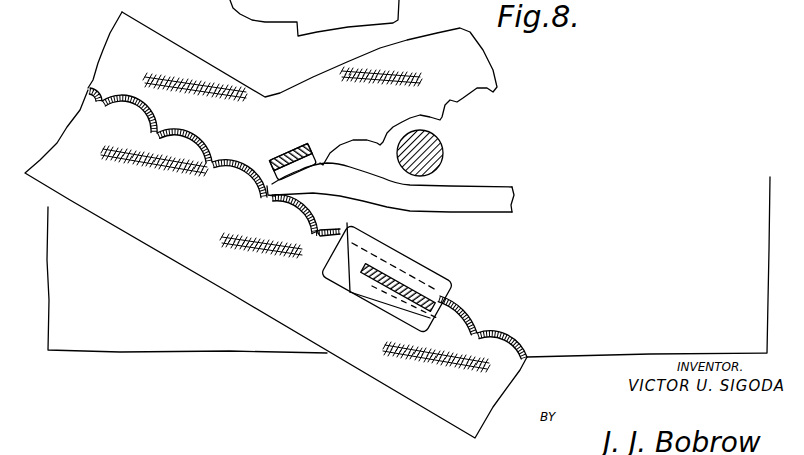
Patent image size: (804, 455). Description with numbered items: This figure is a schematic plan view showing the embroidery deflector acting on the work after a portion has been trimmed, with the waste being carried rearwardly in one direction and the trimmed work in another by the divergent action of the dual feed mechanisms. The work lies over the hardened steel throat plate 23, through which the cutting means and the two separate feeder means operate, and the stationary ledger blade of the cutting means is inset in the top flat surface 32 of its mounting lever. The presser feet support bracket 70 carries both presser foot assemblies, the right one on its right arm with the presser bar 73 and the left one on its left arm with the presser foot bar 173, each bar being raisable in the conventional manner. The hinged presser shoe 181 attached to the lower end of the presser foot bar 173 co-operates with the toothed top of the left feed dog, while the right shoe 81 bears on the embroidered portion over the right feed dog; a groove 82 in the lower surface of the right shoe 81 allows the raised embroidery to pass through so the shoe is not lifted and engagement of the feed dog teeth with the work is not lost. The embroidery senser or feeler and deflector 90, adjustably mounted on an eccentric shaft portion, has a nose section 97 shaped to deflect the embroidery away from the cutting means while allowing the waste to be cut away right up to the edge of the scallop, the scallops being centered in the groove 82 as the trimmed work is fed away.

The throat plate 23 is at (767, 217).
The top flat surface 32 is at (230, 0).
The presser feet support bracket 70 is at (445, 152).
The presser bar 73 is at (404, 281).
The right shoe 81 is at (448, 287).
The groove 82 is at (311, 279).
The embroidery senser or feeler and deflector 90 is at (485, 207).
The nose section 97 is at (265, 197).
The presser foot bar 173 is at (281, 157).
The hinged presser shoe 181 is at (302, 141).